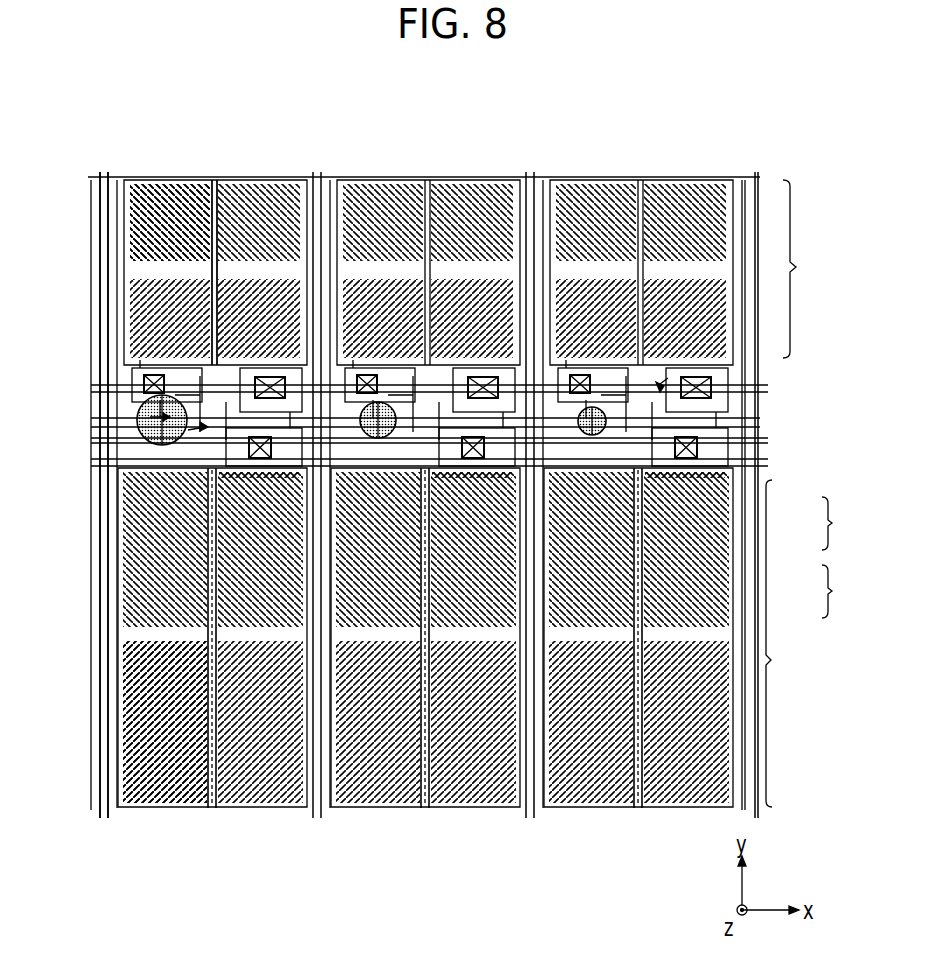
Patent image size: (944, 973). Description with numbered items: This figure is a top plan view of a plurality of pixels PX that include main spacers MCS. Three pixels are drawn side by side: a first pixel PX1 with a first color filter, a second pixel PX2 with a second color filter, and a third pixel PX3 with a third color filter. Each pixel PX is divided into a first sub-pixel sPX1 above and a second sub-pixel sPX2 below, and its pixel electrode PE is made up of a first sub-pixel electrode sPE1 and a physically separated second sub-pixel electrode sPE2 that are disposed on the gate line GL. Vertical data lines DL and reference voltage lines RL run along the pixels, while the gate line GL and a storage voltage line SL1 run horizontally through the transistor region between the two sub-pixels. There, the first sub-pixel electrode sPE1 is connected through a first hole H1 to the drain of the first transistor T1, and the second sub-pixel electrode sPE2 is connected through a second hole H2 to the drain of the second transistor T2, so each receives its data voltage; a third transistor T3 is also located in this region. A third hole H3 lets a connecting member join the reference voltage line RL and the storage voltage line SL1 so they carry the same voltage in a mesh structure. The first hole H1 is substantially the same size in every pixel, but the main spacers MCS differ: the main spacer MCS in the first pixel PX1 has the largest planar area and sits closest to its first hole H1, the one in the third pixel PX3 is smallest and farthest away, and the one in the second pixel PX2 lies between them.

The first pixel PX1 is at (276, 146).
The second pixel PX2 is at (479, 146).
The third pixel PX3 is at (699, 146).
The data line DL is at (109, 175).
The reference voltage line RL is at (218, 175).
The main spacer MCS is at (378, 402).
The first sub-pixel electrode sPE1 is at (130, 268).
The second sub-pixel electrode sPE2 is at (130, 633).
The first hole H1 is at (140, 378).
The second hole H2 is at (700, 437).
The third hole H3 is at (712, 378).
The first transistor T1 is at (137, 415).
The second transistor T2 is at (177, 397).
The third transistor T3 is at (658, 388).
The storage voltage line SL1 is at (769, 384).
The gate line GL is at (769, 435).
The first sub-pixel sPX1 is at (808, 353).
The second sub-pixel sPX2 is at (794, 643).
The pixel PX is at (840, 523).
The pixel electrode PE is at (817, 589).